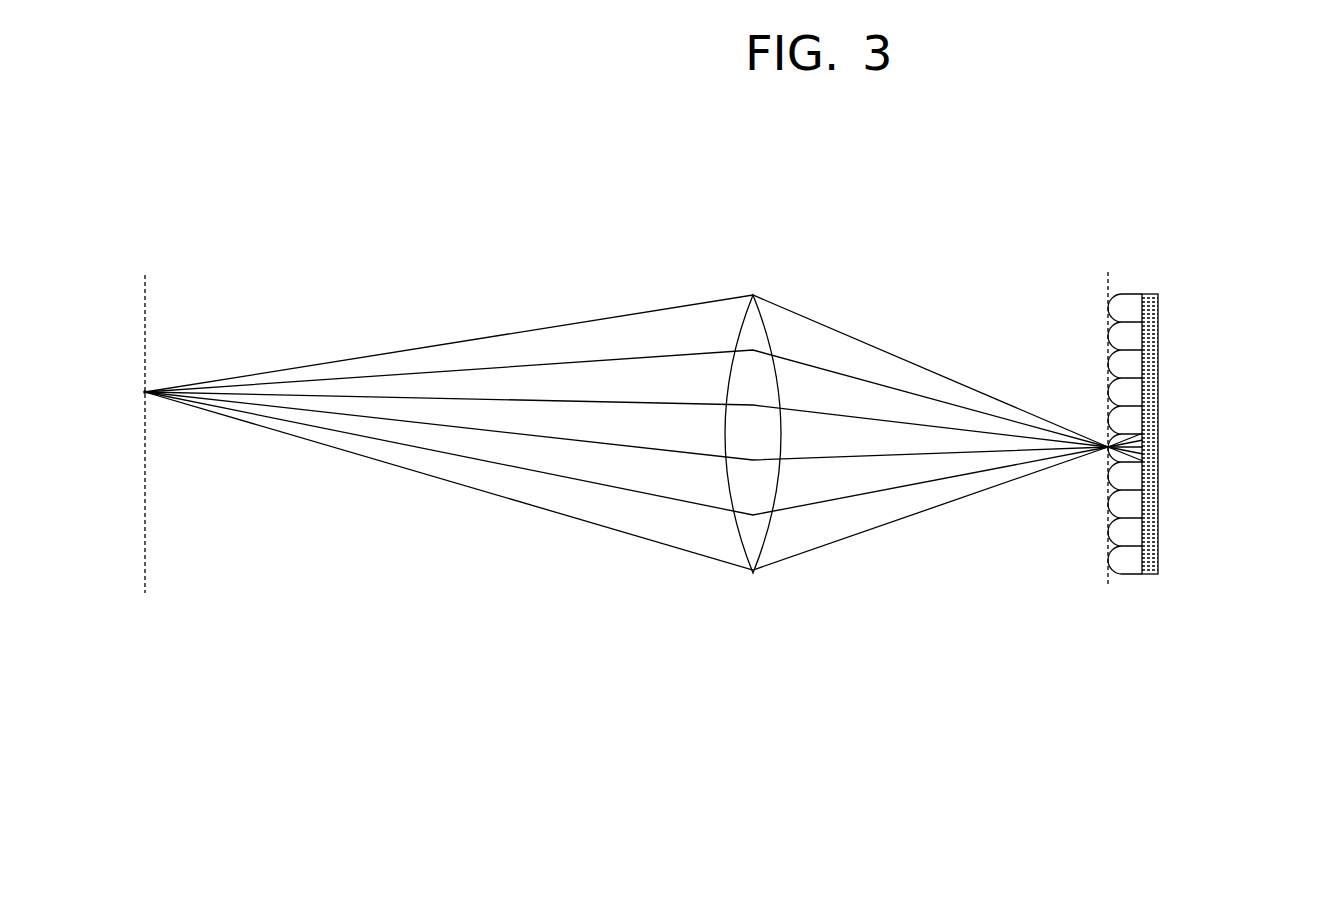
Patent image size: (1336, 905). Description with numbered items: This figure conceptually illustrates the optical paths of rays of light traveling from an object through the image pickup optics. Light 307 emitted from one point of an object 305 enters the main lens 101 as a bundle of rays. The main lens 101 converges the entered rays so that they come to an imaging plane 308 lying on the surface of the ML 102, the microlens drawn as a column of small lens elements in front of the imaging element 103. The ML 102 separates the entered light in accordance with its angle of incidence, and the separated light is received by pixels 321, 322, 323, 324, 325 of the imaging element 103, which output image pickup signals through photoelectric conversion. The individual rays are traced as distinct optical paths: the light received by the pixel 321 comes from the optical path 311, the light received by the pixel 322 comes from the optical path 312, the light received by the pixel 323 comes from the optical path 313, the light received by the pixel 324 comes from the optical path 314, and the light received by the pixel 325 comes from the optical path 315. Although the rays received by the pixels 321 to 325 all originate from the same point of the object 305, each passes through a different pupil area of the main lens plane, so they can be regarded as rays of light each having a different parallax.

The main lens 101 is at (754, 310).
The ML (microlens) 102 is at (1135, 293).
The imaging element 103 is at (1158, 293).
The object 305 is at (145, 303).
The light 307 is at (147, 390).
The imaging plane 308 is at (1110, 276).
The optical path 311 is at (815, 350).
The optical path 312 is at (840, 385).
The optical path 313 is at (862, 440).
The optical path 314 is at (838, 483).
The optical path 315 is at (878, 502).
The pixel 321 is at (1160, 466).
The pixel 322 is at (1157, 458).
The pixel 323 is at (1157, 448).
The pixel 324 is at (1157, 443).
The pixel 325 is at (1163, 440).